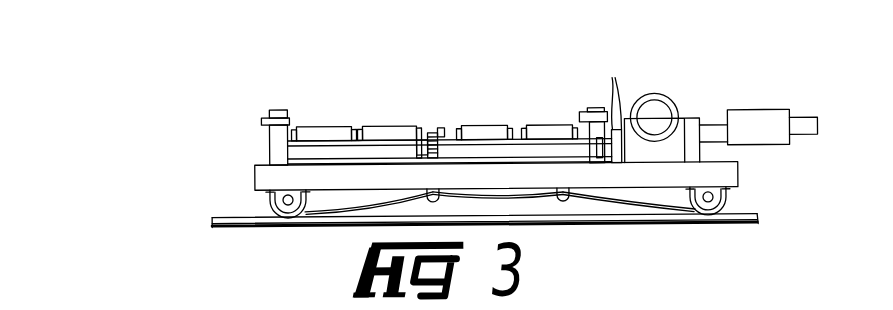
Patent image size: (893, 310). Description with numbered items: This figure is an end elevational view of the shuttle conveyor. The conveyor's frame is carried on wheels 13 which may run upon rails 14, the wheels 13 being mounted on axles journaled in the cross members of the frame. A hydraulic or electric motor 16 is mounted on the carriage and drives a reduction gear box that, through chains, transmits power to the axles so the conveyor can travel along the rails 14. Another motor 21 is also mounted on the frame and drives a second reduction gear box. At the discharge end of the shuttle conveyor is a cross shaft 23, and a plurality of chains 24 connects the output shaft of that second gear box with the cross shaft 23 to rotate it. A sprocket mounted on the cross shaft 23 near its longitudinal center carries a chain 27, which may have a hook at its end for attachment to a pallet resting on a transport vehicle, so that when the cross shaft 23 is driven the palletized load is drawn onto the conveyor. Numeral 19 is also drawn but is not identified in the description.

The wheels 13 is at (265, 213).
The rails 14 is at (693, 221).
The motor 16 is at (742, 113).
The leaf spring 19 is at (624, 203).
The motor 21 is at (657, 96).
The cross shaft 23 is at (516, 152).
The chains 24 is at (613, 81).
The chain 27 is at (435, 128).